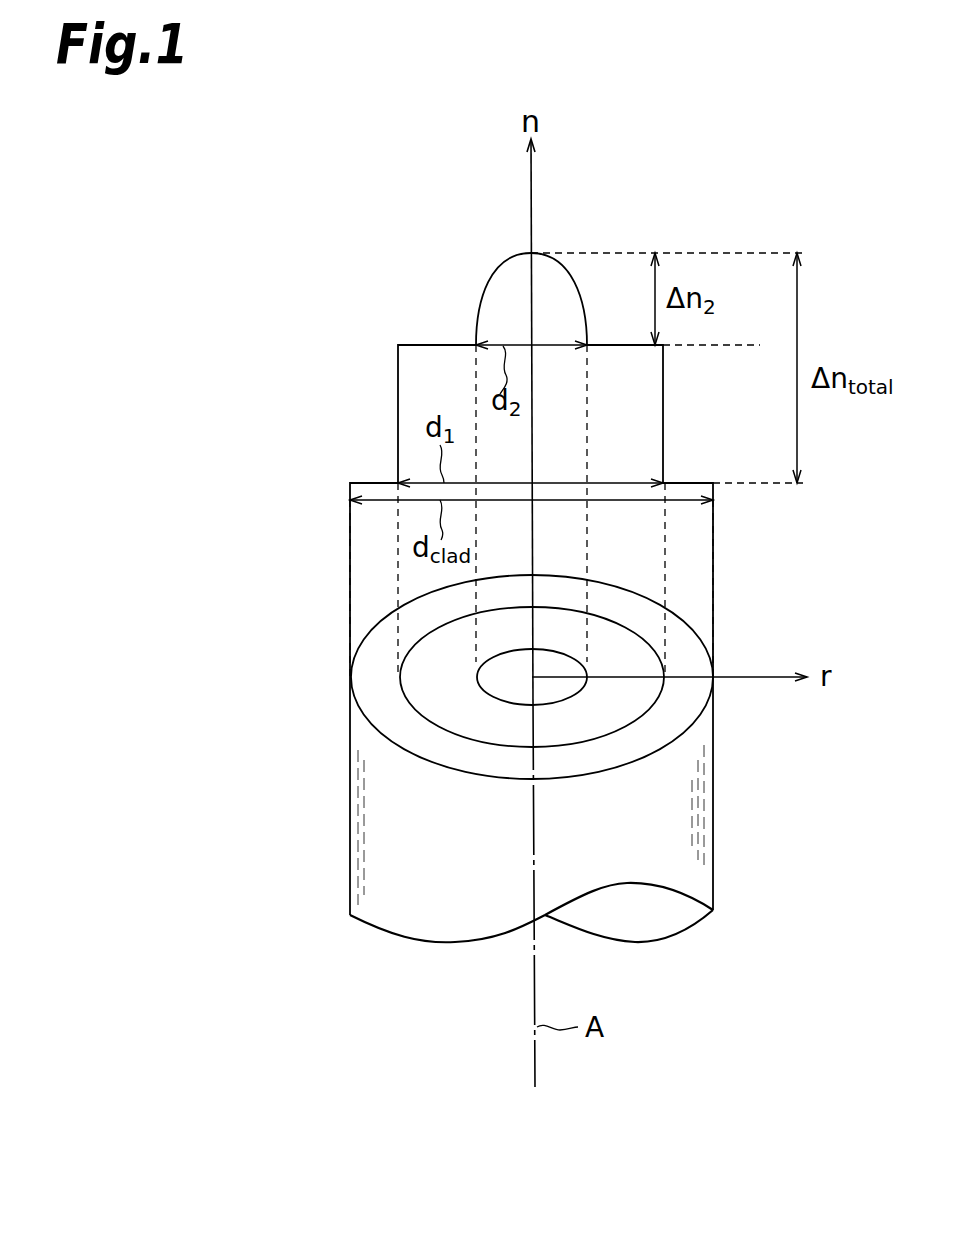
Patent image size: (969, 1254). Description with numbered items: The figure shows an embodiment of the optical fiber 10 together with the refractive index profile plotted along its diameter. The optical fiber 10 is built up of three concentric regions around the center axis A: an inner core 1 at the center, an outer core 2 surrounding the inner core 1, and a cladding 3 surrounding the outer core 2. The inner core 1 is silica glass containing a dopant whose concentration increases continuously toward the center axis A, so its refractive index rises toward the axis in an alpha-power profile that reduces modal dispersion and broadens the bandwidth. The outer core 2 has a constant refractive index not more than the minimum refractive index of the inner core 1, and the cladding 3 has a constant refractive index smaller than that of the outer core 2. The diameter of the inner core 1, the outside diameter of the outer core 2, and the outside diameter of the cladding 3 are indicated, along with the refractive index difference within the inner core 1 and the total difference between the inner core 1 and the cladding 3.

The inner core 1 is at (510, 662).
The outer core 2 is at (433, 666).
The cladding 3 is at (372, 704).
The optical fiber 10 is at (378, 978).